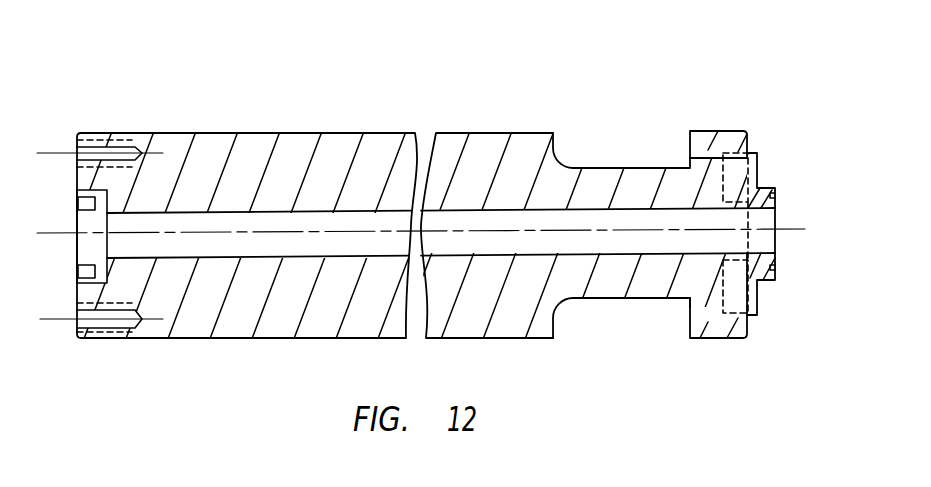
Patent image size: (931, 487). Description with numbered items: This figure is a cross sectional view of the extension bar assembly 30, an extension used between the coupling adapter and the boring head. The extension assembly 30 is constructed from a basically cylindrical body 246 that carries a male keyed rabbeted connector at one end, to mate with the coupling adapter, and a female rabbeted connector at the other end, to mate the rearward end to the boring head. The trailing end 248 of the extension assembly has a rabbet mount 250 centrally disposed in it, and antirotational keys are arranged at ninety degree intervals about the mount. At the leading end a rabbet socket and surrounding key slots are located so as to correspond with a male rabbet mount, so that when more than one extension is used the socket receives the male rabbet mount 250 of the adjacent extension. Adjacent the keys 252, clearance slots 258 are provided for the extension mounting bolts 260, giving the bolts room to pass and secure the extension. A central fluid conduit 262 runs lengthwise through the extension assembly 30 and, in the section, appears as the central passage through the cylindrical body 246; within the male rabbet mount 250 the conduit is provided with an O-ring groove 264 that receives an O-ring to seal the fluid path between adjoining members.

The extension bar assembly 30 is at (207, 150).
The cylindrical body 246 is at (283, 152).
The trailing end 248 is at (748, 152).
The rabbet mount 250 is at (767, 188).
The keys 252 is at (762, 310).
The clearance slots 258 is at (585, 150).
The extension mounting bolts 260 is at (703, 150).
The central fluid conduit 262 is at (367, 223).
The O-ring groove 264 is at (777, 270).